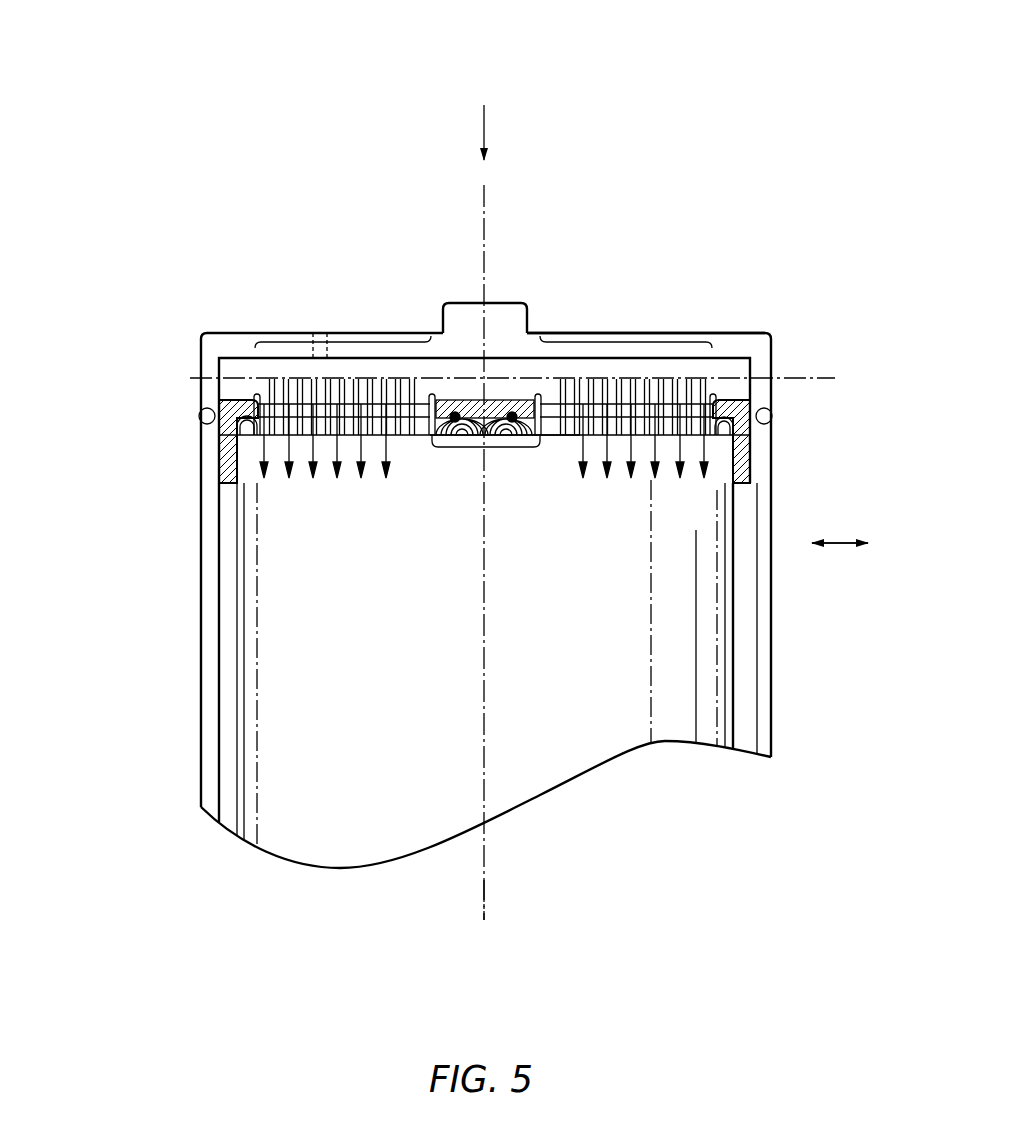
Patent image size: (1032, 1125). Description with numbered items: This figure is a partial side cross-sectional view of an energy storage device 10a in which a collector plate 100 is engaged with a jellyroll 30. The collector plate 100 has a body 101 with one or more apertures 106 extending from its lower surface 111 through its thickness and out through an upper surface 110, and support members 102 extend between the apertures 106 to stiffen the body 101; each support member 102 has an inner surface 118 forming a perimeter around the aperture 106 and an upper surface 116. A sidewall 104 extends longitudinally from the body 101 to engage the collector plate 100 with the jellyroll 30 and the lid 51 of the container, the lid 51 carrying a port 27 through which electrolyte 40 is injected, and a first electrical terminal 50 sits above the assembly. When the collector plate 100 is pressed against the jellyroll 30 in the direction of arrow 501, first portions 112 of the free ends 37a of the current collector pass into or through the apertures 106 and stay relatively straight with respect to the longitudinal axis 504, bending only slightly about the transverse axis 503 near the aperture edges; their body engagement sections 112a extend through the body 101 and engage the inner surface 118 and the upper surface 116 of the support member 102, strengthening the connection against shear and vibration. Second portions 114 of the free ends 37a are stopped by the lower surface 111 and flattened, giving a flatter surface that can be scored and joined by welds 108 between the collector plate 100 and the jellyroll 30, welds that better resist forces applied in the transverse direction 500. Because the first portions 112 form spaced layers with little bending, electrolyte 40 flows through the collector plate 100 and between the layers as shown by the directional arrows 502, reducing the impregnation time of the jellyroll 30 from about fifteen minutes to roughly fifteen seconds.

The energy storage device 10a is at (690, 148).
The collector plate 100 is at (148, 424).
The body 101 is at (234, 356).
The support member 102 is at (450, 397).
The sidewall 104 is at (743, 448).
The aperture 106 is at (266, 328).
The weld 108 is at (525, 398).
The upper surface 110 is at (502, 372).
The lower surface 111 is at (465, 441).
The first portion 112 is at (343, 345).
The body engagement section 112a is at (245, 386).
The second portion 114 is at (477, 448).
The upper surface 116 is at (513, 400).
The inner surface 118 is at (570, 436).
The port 27 is at (320, 328).
The jellyroll 30 is at (461, 676).
The free ends 37a is at (694, 344).
The electrolyte 40 is at (330, 518).
The first electrical terminal 50 is at (491, 361).
The lid 51 is at (660, 343).
The transverse direction 500 is at (842, 514).
The arrow 501 is at (487, 121).
The directional arrows 502 is at (393, 438).
The transverse axis 503 is at (790, 378).
The longitudinal axis 504 is at (488, 915).